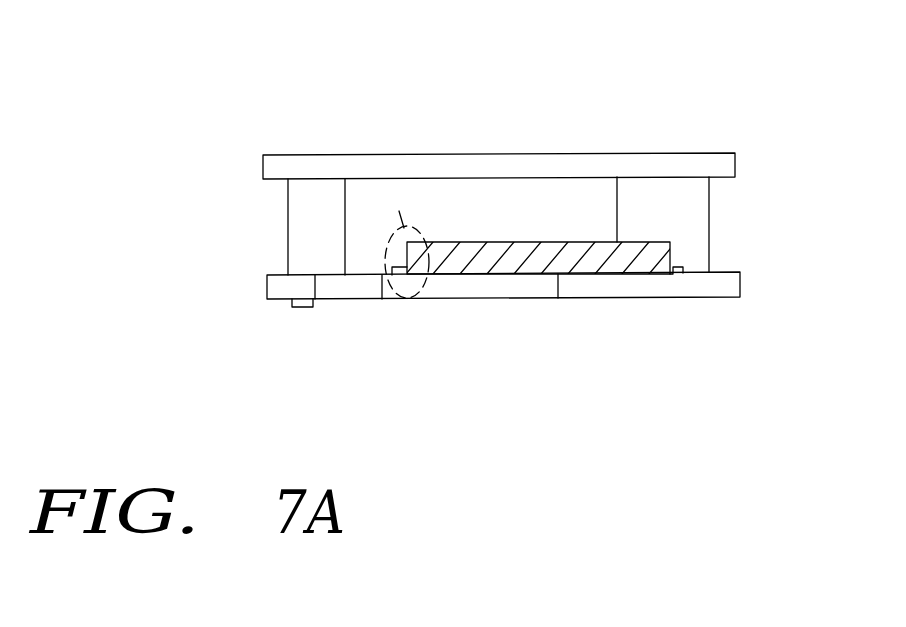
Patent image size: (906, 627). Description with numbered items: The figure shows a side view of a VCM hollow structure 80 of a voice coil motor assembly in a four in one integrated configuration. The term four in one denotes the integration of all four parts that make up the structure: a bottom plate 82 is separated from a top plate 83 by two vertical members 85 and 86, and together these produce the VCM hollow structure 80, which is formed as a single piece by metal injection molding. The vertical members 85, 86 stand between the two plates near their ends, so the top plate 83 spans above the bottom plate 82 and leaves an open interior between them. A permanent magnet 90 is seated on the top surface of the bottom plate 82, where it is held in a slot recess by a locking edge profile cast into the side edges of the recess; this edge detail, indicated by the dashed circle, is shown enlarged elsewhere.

The VCM hollow structure 80 is at (323, 102).
The bottom plate 82 is at (350, 288).
The top plate 83 is at (522, 167).
The vertical member 85 is at (303, 221).
The vertical member 86 is at (698, 225).
The permanent magnet 90 is at (595, 257).